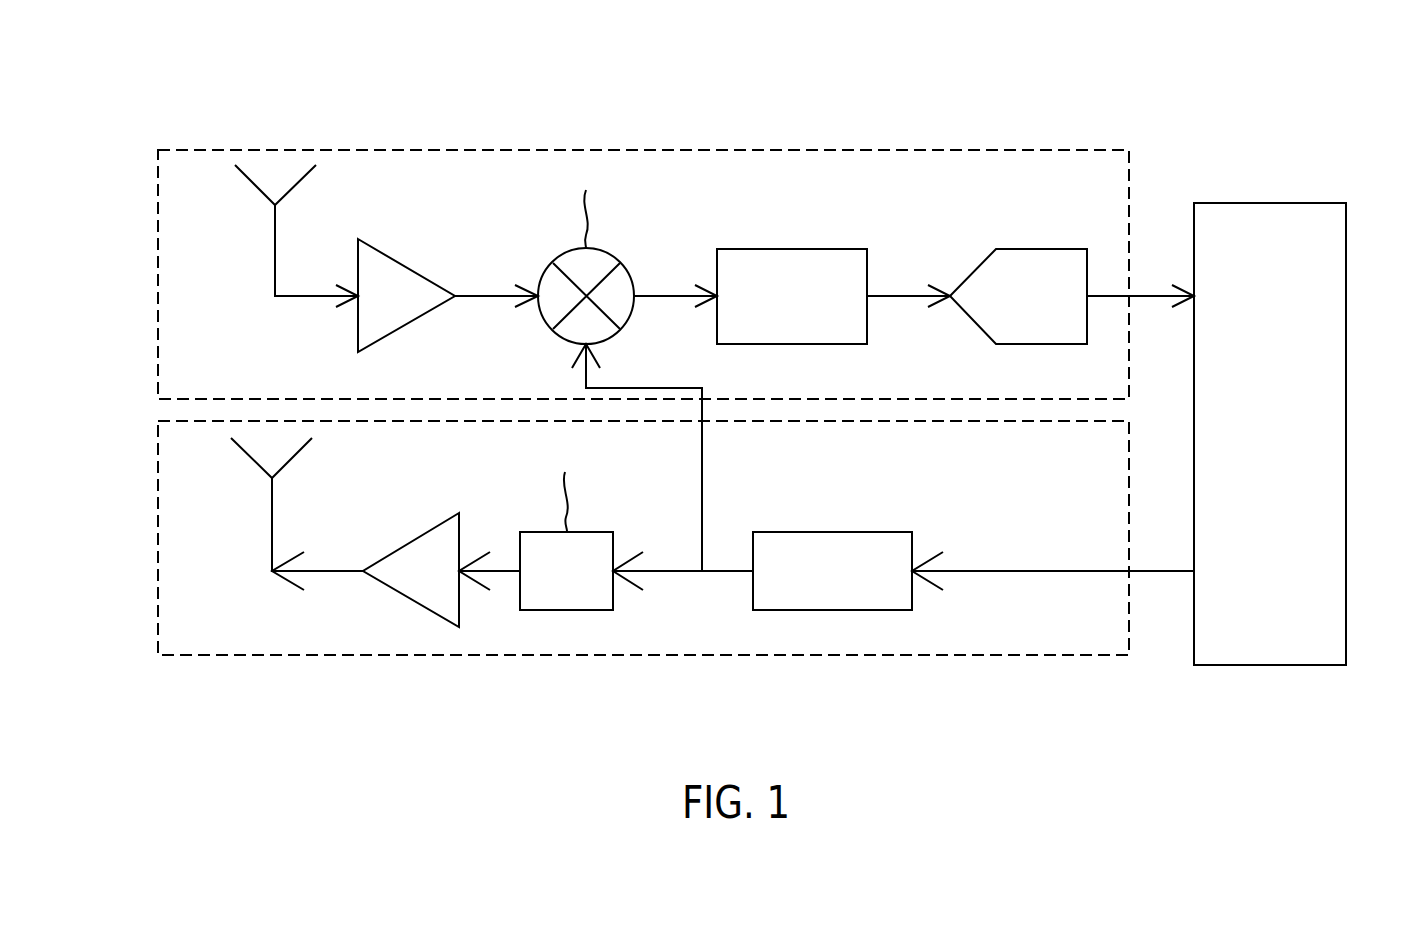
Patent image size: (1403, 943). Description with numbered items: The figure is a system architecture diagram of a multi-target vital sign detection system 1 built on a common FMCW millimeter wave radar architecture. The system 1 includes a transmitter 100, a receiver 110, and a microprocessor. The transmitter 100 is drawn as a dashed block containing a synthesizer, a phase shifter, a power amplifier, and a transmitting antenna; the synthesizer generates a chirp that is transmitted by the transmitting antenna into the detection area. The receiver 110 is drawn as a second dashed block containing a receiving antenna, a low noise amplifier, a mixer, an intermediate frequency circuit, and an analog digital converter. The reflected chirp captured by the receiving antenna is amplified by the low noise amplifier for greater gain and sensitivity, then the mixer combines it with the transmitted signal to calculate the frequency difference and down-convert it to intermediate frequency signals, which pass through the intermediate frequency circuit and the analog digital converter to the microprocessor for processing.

The multi-target vital sign detection system 1 is at (374, 90).
The receiver 110 is at (690, 149).
The transmitter 100 is at (705, 656).